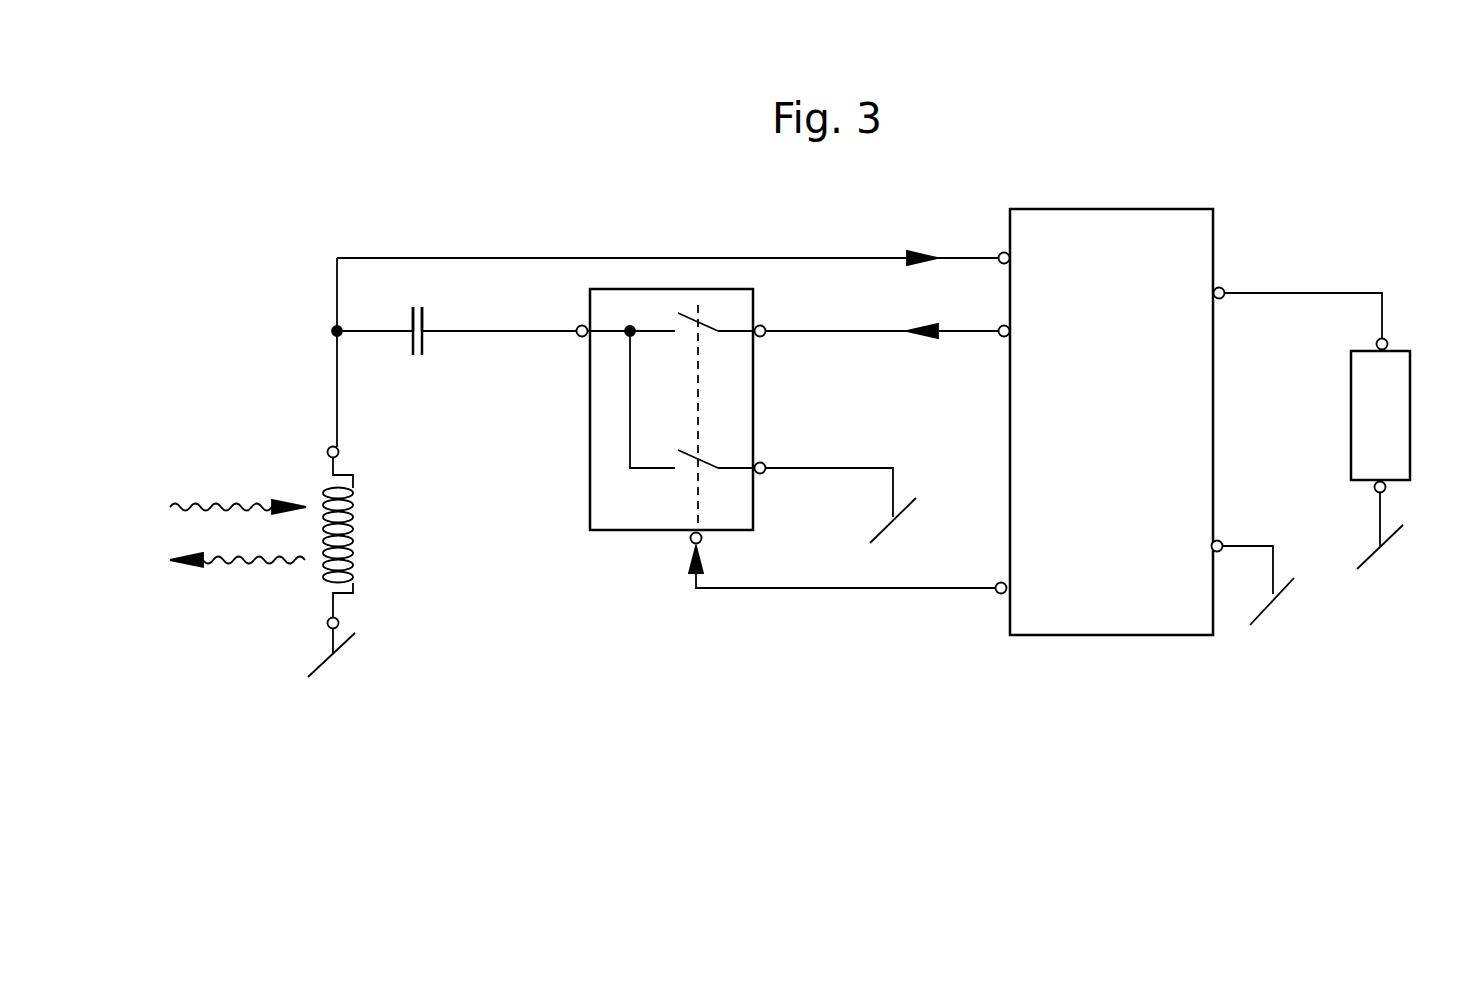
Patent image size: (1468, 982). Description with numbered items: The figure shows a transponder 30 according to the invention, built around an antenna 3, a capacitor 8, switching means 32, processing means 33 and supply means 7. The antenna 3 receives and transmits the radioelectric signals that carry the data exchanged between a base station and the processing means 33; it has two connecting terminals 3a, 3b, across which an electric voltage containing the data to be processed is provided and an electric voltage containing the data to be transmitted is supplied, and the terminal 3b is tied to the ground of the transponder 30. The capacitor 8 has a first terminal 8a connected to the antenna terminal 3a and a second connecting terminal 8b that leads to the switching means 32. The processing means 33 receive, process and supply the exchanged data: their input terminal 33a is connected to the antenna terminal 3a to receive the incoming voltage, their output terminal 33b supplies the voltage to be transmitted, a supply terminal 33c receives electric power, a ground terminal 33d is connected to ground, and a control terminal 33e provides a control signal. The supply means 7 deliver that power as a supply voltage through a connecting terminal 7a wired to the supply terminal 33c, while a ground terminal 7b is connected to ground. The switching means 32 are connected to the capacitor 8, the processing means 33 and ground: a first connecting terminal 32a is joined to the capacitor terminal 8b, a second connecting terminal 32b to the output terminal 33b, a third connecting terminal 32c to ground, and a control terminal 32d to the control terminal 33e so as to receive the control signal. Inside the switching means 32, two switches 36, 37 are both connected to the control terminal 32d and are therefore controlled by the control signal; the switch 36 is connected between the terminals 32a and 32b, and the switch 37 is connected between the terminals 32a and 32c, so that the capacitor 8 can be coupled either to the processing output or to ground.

The antenna 3 is at (353, 535).
The connecting terminal 3a is at (327, 452).
The connecting terminal 3b is at (327, 625).
The supply means 7 is at (1356, 420).
The connecting terminal 7a is at (1387, 340).
The ground terminal 7b is at (1385, 492).
The capacitor 8 is at (444, 360).
The first terminal 8a is at (412, 318).
The second connecting terminal 8b is at (424, 318).
The transponder 30 is at (481, 641).
The switching means 32 is at (615, 515).
The first connecting terminal 32a is at (578, 338).
The second connecting terminal 32b is at (765, 338).
The third connecting terminal 32c is at (765, 475).
The control terminal 32d is at (690, 540).
The processing means 33 is at (1115, 613).
The input terminal 33a is at (1000, 252).
The output terminal 33b is at (1002, 338).
The supply terminal 33c is at (1222, 288).
The ground terminal 33d is at (1220, 540).
The control terminal 33e is at (1000, 595).
The switch 36 is at (650, 313).
The switch 37 is at (692, 397).